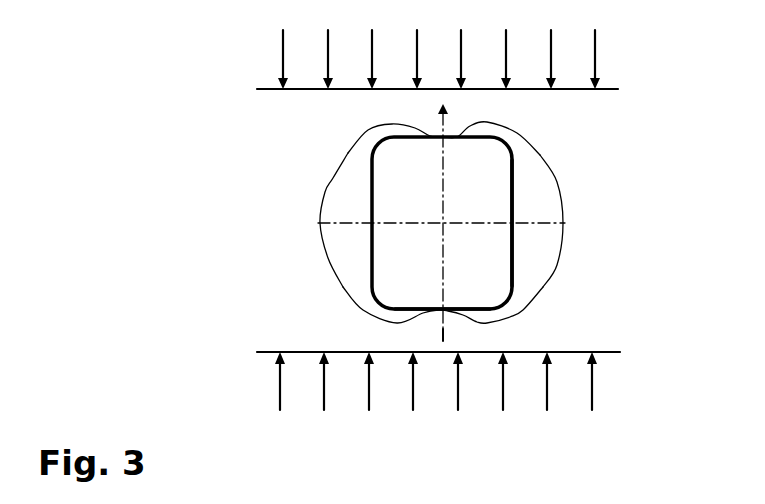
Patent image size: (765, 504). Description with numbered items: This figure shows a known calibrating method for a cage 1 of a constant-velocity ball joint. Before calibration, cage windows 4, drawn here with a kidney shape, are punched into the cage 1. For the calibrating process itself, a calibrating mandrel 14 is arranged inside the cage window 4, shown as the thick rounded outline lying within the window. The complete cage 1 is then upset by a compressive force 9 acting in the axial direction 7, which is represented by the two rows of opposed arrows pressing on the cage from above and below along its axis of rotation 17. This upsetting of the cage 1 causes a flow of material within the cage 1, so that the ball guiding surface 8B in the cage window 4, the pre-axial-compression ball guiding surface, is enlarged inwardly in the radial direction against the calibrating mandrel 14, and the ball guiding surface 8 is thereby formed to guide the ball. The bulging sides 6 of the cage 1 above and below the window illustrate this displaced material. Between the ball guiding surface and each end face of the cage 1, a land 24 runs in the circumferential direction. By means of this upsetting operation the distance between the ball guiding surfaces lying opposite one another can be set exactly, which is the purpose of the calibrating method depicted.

The cage 1 is at (449, 219).
The cage window 4 is at (538, 190).
The side 6 is at (480, 127).
The axial direction 7 is at (440, 112).
The ball guiding surface 8 is at (435, 136).
The ball guiding surface 8B is at (437, 308).
The compressive force 9 is at (593, 385).
The calibrating mandrel 14 is at (513, 258).
The axis of rotation 17 is at (443, 335).
The land 24 is at (457, 335).